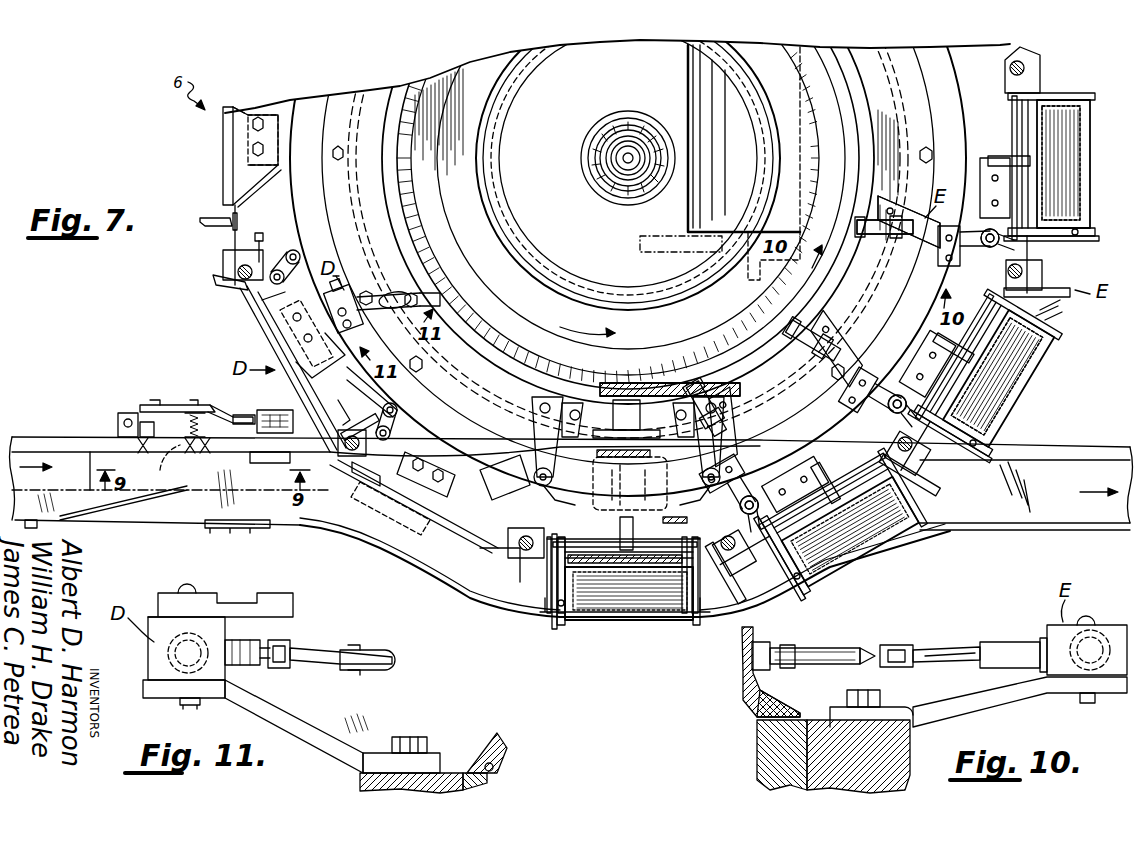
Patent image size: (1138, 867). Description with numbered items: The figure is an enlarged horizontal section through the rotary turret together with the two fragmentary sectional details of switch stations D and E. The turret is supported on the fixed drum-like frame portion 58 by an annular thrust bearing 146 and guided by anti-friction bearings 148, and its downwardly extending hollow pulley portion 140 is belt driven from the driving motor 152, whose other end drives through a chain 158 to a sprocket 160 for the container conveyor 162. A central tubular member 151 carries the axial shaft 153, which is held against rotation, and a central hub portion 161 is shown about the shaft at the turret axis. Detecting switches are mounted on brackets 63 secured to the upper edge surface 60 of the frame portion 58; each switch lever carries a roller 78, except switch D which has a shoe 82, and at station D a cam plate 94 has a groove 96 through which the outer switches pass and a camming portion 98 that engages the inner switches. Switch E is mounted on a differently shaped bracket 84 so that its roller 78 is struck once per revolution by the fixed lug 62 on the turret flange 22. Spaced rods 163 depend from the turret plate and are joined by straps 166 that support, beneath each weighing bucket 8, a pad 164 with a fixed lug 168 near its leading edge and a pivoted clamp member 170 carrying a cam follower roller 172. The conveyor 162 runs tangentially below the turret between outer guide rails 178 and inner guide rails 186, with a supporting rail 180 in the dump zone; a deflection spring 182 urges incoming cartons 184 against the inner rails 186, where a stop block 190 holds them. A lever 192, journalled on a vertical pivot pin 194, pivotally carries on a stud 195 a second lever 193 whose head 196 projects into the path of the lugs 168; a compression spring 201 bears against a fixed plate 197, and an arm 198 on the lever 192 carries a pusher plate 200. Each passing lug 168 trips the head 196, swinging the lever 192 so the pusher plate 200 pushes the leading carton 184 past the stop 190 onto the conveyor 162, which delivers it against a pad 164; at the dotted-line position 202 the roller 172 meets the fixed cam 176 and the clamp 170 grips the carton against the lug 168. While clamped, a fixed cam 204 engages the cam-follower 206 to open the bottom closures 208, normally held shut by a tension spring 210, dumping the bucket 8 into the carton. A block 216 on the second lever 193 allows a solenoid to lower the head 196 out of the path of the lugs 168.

In FIG. 7, the weighing bucket 8 is at (1088, 135).
In FIG. 7, the upstanding circular flange 22 is at (482, 290).
In FIG. 11, the upstanding circular flange 22 is at (482, 742).
In FIG. 10, the upstanding circular flange 22 is at (740, 647).
In FIG. 7, the fixed drum-like frame portion 58 is at (355, 147).
In FIG. 11, the fixed drum-like frame portion 58 is at (360, 782).
In FIG. 10, the fixed drum-like frame portion 58 is at (908, 775).
In FIG. 11, the upper edge surface 60 is at (380, 750).
In FIG. 10, the upper edge surface 60 is at (913, 727).
In FIG. 7, the fixed lug 62 is at (855, 240).
In FIG. 10, the fixed lug 62 is at (815, 650).
In FIG. 7, the bracket 63 is at (896, 204).
In FIG. 11, the bracket 63 is at (318, 718).
In FIG. 10, the roller 78 is at (905, 645).
In FIG. 7, the shoe 82 is at (437, 287).
In FIG. 11, the shoe 82 is at (370, 652).
In FIG. 10, the bracket 84 is at (1018, 697).
In FIG. 7, the cam plate 94 is at (336, 336).
In FIG. 11, the cam plate 94 is at (170, 597).
In FIG. 7, the groove or passageway 96 is at (360, 325).
In FIG. 11, the groove or passageway 96 is at (217, 598).
In FIG. 7, the camming portion 98 is at (414, 360).
In FIG. 11, the camming portion 98 is at (278, 593).
In FIG. 7, the hollow pulley portion 140 is at (516, 91).
In FIG. 11, the annular thrust bearing 146 is at (498, 755).
In FIG. 10, the annular thrust bearing 146 is at (785, 700).
In FIG. 11, the anti-friction bearings 148 is at (488, 780).
In FIG. 10, the anti-friction bearings 148 is at (757, 738).
In FIG. 7, the central tubular member 151 is at (638, 136).
In FIG. 7, the driving motor 152 is at (690, 72).
In FIG. 7, the axial shaft 153 is at (622, 147).
In FIG. 7, the chain 158 is at (600, 378).
In FIG. 7, the sprocket 160 is at (655, 470).
In FIG. 7, the hub 161 is at (640, 200).
In FIG. 7, the container conveyor 162 is at (170, 522).
In FIG. 7, the rods 163 is at (237, 268).
In FIG. 7, the pad 164 is at (215, 146).
In FIG. 7, the straps 166 is at (238, 200).
In FIG. 7, the fixed lugs 168 is at (212, 222).
In FIG. 7, the pivoted clamp member 170 is at (220, 283).
In FIG. 7, the cam follower roller 172 is at (290, 250).
In FIG. 7, the fixed cam 176 is at (440, 448).
In FIG. 7, the outer guide rails 178 is at (406, 566).
In FIG. 7, the supporting rail 180 is at (503, 594).
In FIG. 7, the deflection spring 182 is at (92, 524).
In FIG. 7, the containers or cartons 184 is at (55, 462).
In FIG. 7, the inner guide rails 186 is at (25, 440).
In FIG. 7, the stop block 190 is at (238, 462).
In FIG. 7, the lever 192 is at (140, 425).
In FIG. 7, the second lever 193 is at (245, 414).
In FIG. 7, the vertical pivot pin 194 is at (124, 422).
In FIG. 7, the stud 195 is at (195, 410).
In FIG. 7, the head 196 is at (277, 412).
In FIG. 7, the fixed plate 197 is at (116, 428).
In FIG. 7, the arm 198 is at (232, 412).
In FIG. 7, the pusher plate 200 is at (172, 470).
In FIG. 7, the compression spring 201 is at (160, 452).
In FIG. 7, the dotted-line position 202 is at (365, 500).
In FIG. 7, the fixed cam 204 is at (508, 490).
In FIG. 7, the cam-follower 206 is at (985, 158).
In FIG. 7, the bottom closures 208 is at (1082, 180).
In FIG. 7, the tension spring 210 is at (1080, 233).
In FIG. 7, the block 216 is at (165, 402).